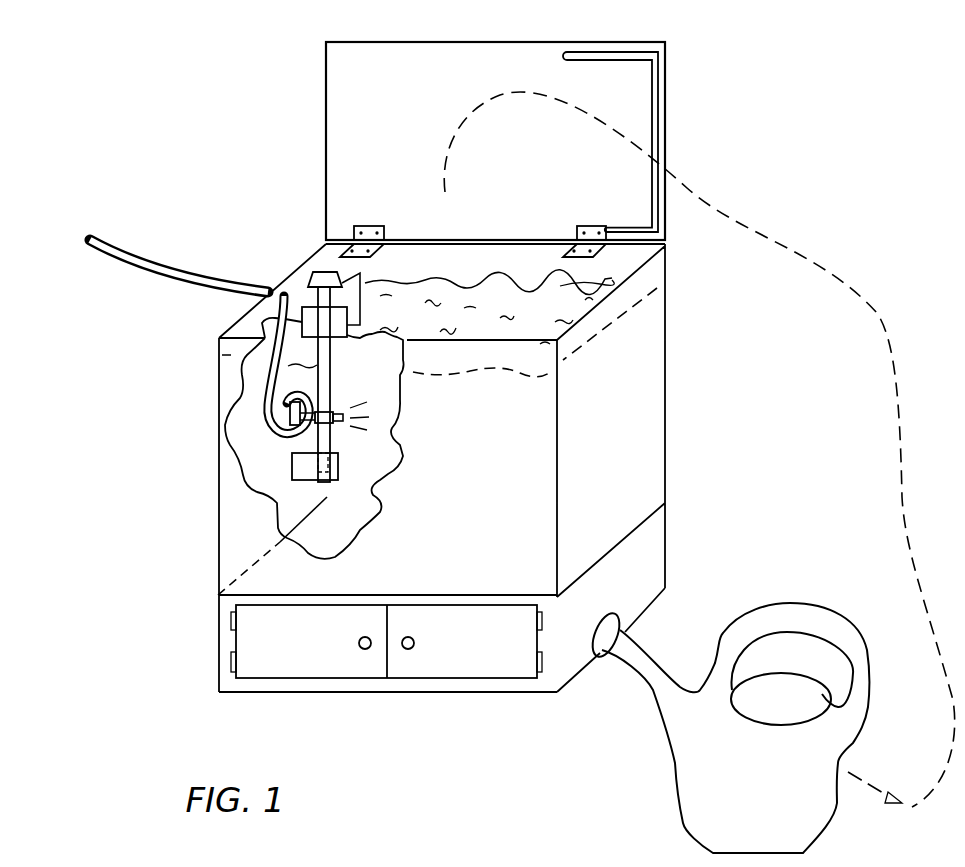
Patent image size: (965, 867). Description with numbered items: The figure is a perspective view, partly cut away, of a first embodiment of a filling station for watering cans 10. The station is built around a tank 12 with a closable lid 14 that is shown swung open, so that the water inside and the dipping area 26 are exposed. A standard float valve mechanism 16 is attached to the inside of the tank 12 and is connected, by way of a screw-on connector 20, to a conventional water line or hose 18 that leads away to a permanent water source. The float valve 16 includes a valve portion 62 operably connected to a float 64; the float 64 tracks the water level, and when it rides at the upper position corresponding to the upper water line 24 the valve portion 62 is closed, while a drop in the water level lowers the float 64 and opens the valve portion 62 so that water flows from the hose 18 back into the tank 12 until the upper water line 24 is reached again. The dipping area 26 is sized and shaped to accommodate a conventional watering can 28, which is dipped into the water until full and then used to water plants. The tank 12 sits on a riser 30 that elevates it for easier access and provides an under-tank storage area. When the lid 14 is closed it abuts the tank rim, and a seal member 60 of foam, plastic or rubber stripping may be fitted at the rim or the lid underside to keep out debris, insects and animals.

The filling station for watering cans 10 is at (180, 546).
The tank 12 is at (600, 470).
The lid 14 is at (637, 124).
The float valve mechanism 16 is at (287, 306).
The hose 18 is at (150, 282).
The screw-on connector 20 is at (270, 425).
The upper water line 24 is at (467, 304).
The dipping area 26 is at (543, 300).
The watering can 28 is at (692, 748).
The riser 30 is at (638, 572).
The seal member 60 is at (657, 72).
The valve portion 62 is at (322, 278).
The float 64 is at (332, 338).